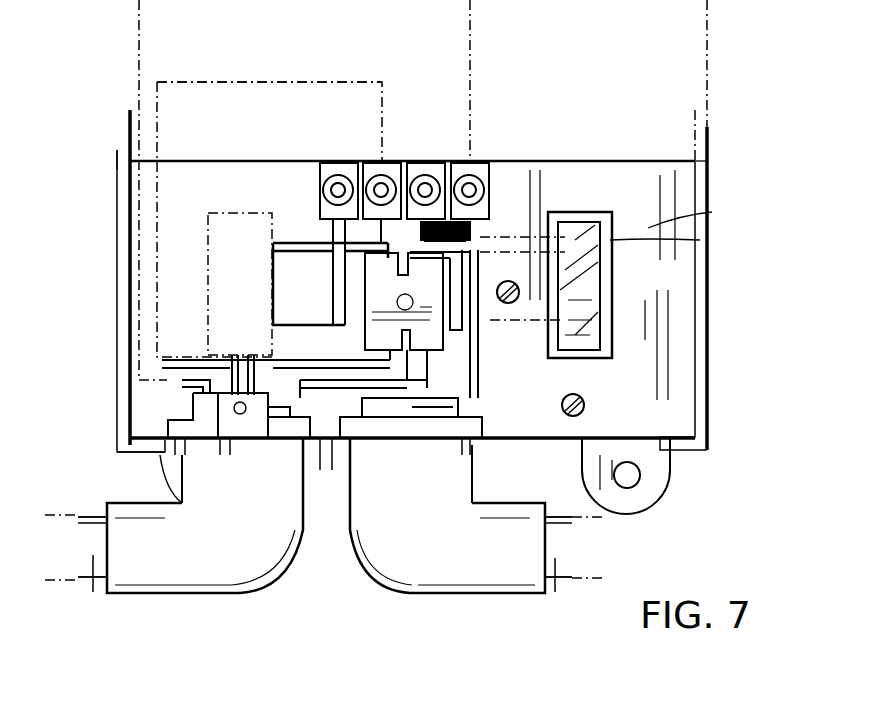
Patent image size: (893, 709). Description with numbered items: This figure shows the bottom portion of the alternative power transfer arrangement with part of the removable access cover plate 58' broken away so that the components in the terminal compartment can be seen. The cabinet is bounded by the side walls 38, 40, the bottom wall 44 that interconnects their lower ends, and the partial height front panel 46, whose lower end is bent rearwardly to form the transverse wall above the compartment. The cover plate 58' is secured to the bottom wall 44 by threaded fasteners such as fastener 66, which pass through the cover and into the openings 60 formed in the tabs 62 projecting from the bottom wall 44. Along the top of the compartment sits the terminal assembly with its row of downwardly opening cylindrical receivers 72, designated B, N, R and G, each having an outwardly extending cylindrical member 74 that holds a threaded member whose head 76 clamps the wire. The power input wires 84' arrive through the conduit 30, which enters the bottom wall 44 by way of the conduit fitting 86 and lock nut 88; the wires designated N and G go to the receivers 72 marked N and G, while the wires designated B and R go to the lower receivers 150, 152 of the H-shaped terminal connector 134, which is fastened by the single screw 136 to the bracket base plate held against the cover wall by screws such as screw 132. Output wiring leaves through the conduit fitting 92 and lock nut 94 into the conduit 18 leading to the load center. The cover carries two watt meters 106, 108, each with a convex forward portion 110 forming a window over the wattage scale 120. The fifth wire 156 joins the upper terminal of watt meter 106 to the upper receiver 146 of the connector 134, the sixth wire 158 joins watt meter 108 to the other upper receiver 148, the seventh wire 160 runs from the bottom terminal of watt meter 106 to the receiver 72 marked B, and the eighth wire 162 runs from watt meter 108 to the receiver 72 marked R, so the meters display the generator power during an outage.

The conduit 18 is at (557, 560).
The conduit 30 is at (95, 580).
The side wall 38 is at (117, 150).
The side wall 40 is at (715, 185).
The bottom wall 44 is at (325, 465).
The front panel 46 is at (680, 147).
The removable access cover plate 58' is at (713, 215).
The openings 60 is at (238, 415).
The tabs 62 is at (252, 428).
The threaded fastener 66 is at (560, 418).
The cylindrical receivers 72 is at (337, 220).
The cylindrical member 74 is at (330, 188).
The head of threaded member 76 is at (335, 195).
The power input wires 84' is at (276, 332).
The conduit fitting 86 is at (222, 565).
The lock nut 88 is at (150, 450).
The conduit fitting 92 is at (462, 565).
The lock nut 94 is at (458, 440).
The watt meter 106 is at (248, 185).
The watt meter 108 is at (641, 351).
The forward portion 110 is at (612, 290).
The wattage scale 120 is at (700, 240).
The screw 132 is at (575, 235).
The terminal connector 134 is at (400, 395).
The screw 136 is at (395, 304).
The upper cylindrical receiver 146 is at (397, 250).
The upper cylindrical receiver 148 is at (500, 430).
The lower cylindrical receiver 150 is at (362, 396).
The lower cylindrical receiver 152 is at (510, 350).
The fifth wire 156 is at (300, 250).
The sixth wire 158 is at (460, 258).
The seventh wire 160 is at (333, 266).
The eighth wire 162 is at (548, 252).